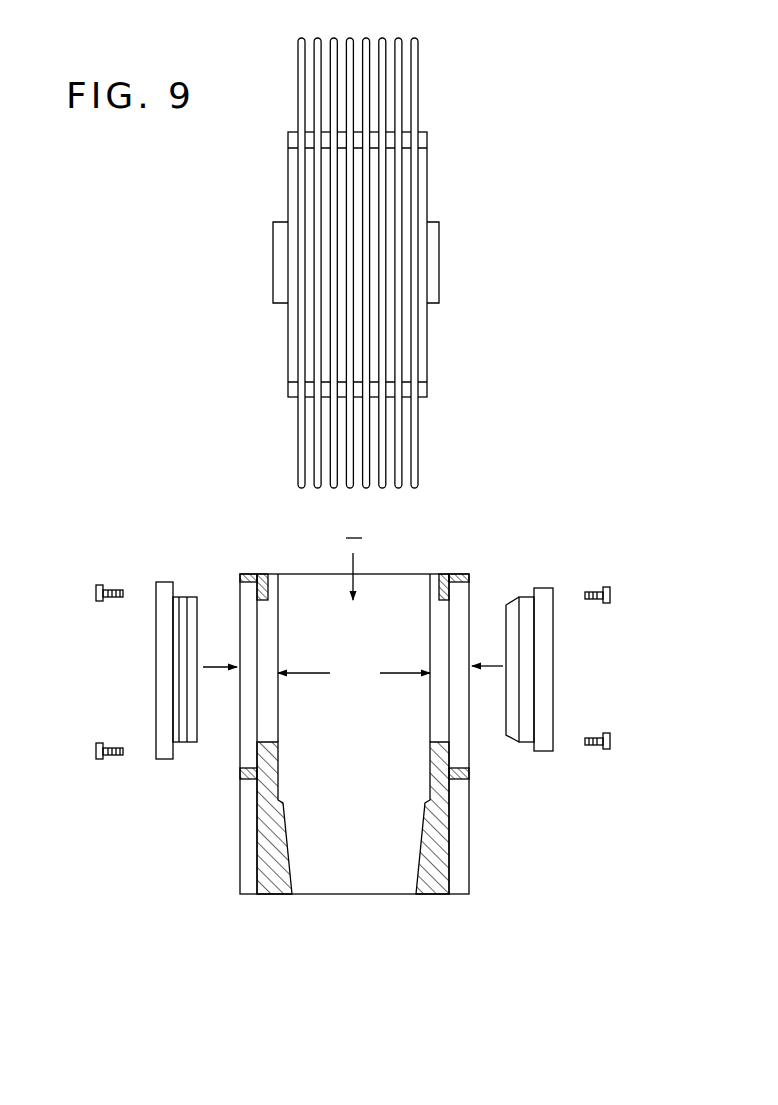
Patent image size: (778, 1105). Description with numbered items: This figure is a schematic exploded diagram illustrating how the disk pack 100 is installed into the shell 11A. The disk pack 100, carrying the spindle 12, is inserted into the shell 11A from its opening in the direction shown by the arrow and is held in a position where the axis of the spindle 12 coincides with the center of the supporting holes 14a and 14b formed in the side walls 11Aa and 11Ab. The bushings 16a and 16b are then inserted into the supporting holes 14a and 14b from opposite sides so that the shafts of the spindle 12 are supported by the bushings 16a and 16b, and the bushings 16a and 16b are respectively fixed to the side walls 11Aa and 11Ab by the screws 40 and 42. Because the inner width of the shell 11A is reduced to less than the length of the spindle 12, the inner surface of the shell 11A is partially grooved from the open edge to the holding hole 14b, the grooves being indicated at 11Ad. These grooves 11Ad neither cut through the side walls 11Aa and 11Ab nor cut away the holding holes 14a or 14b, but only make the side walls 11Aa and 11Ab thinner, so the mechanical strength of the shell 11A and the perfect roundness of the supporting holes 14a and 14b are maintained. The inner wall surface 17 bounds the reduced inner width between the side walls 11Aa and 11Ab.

The heat exchanger 100 is at (387, 263).
The spindle 12 is at (439, 258).
The shell 11A is at (361, 706).
The side wall 11Aa is at (258, 812).
The side wall 11Ab is at (449, 802).
The groove 11Ad is at (273, 574).
The supporting hole 14a is at (268, 600).
The supporting hole 14b is at (445, 600).
The inner wall 17 is at (248, 643).
The bushing 16a is at (163, 582).
The bushing 16b is at (545, 588).
The screws 40 is at (97, 588).
The screws 42 is at (611, 592).